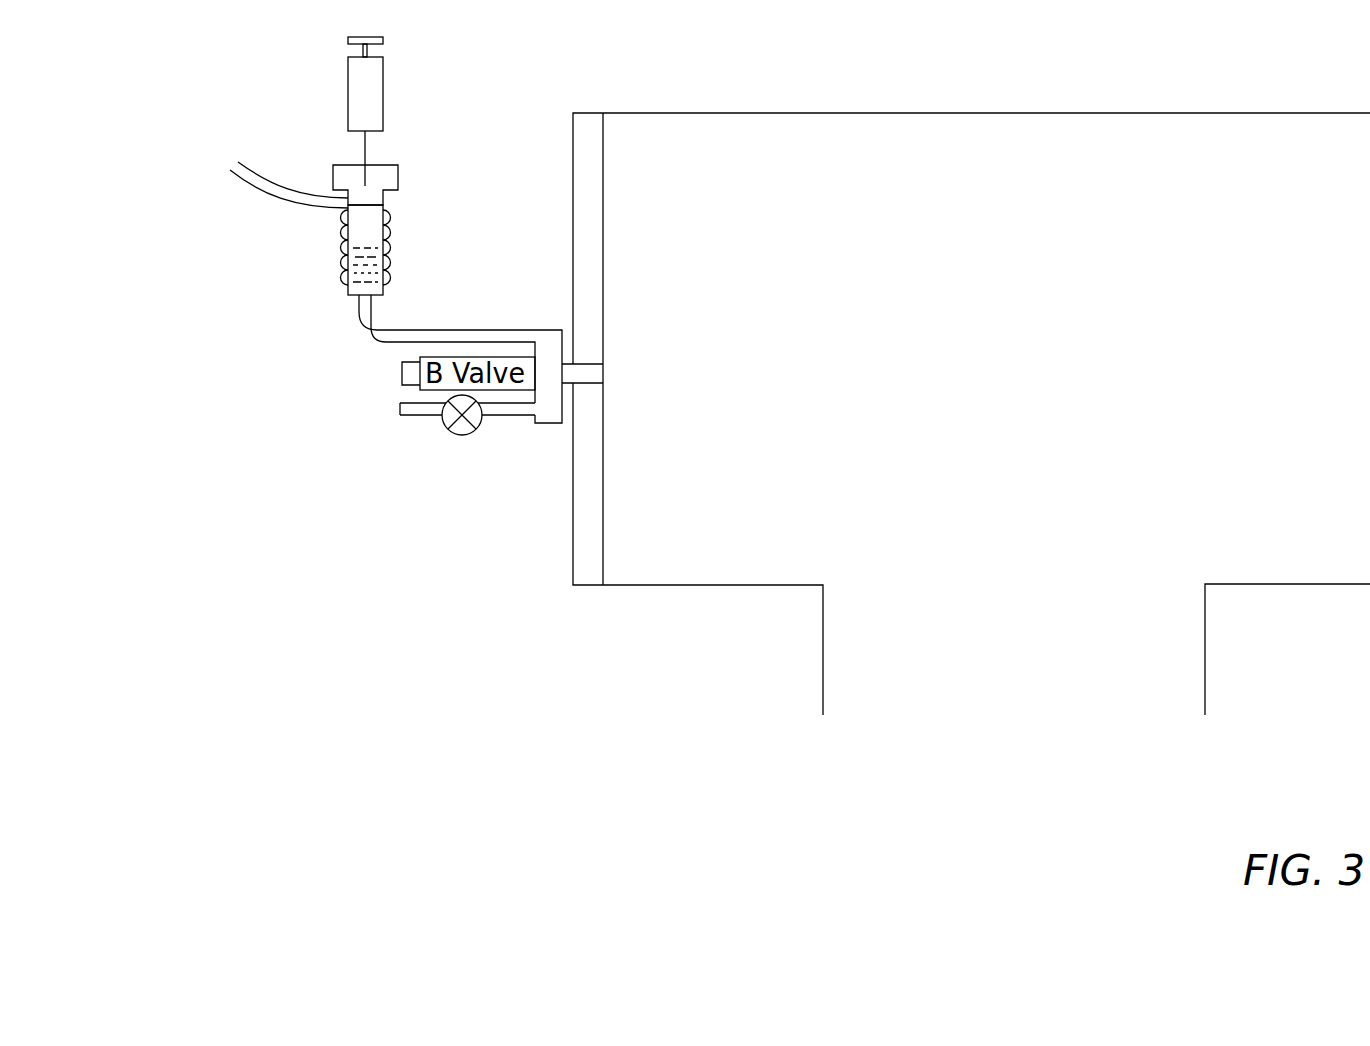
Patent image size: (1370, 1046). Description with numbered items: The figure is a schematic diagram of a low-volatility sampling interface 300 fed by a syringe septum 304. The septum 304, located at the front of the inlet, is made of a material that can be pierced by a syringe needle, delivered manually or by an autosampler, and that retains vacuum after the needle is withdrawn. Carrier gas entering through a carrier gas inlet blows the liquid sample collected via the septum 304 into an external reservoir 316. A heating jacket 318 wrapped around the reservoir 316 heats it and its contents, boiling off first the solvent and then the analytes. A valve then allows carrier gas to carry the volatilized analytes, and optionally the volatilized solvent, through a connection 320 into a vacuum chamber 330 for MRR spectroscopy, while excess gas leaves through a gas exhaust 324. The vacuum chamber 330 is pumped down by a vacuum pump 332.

The low-volatility sampling interface 300 is at (318, 251).
The septum 304 is at (307, 122).
The external reservoir 316 is at (355, 279).
The heating jacket 318 is at (421, 259).
The inlet port to vacuum chamber 320 is at (562, 373).
The gas exhaust 324 is at (400, 408).
The vacuum chamber 330 is at (810, 371).
The vacuum pump 332 is at (1027, 760).